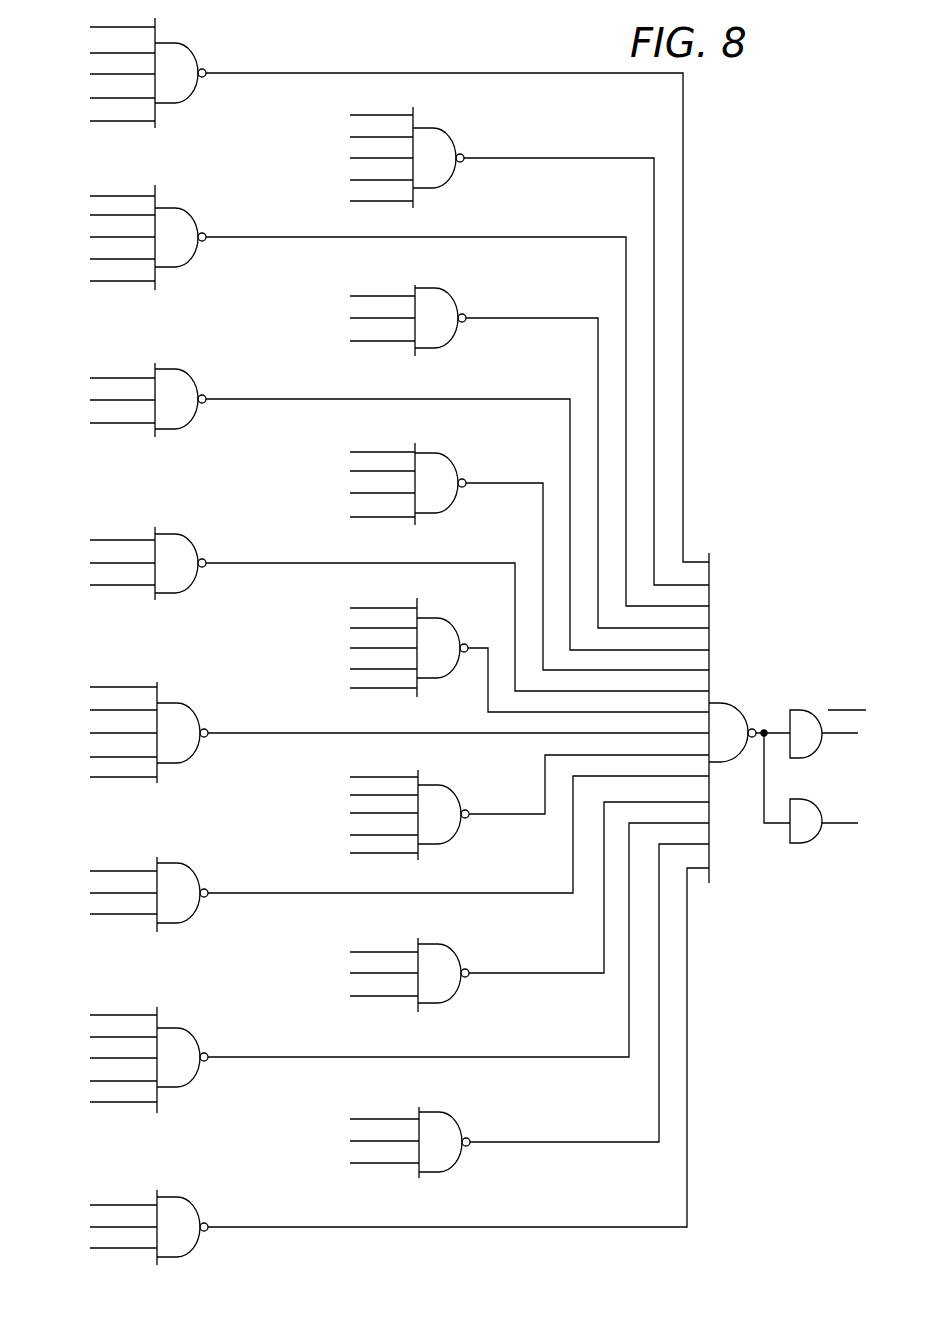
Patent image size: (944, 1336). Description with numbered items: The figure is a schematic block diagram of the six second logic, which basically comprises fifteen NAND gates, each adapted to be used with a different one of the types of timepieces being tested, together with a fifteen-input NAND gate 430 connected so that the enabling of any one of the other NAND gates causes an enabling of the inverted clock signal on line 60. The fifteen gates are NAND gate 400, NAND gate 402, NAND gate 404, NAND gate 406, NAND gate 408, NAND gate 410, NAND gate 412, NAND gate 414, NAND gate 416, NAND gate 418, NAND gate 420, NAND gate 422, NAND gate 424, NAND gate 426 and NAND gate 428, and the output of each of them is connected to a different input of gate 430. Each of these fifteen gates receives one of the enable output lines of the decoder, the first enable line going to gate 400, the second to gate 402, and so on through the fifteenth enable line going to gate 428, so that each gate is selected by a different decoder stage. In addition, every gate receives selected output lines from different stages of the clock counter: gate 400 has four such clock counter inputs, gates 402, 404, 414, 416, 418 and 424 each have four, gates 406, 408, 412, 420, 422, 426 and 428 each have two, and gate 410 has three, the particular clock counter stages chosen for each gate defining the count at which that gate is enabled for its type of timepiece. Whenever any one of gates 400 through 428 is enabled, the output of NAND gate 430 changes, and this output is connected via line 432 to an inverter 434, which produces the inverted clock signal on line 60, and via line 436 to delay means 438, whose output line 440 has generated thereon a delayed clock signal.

The NAND gate 400 is at (192, 60).
The NAND gate 402 is at (450, 145).
The NAND gate 404 is at (192, 225).
The NAND gate 406 is at (452, 305).
The NAND gate 408 is at (192, 387).
The NAND gate 410 is at (452, 470).
The NAND gate 412 is at (192, 552).
The NAND gate 414 is at (446, 635).
The NAND gate 416 is at (193, 720).
The NAND gate 418 is at (447, 803).
The NAND gate 420 is at (193, 880).
The NAND gate 422 is at (455, 960).
The NAND gate 424 is at (193, 1044).
The NAND gate 426 is at (456, 1128).
The NAND gate 428 is at (193, 1213).
The 15 input NAND gate 430 is at (722, 706).
The line 432 is at (756, 740).
The inverter 434 is at (797, 712).
The line 436 is at (768, 828).
The delay means 438 is at (800, 846).
The output line 440 is at (830, 818).
The line 60 is at (832, 735).